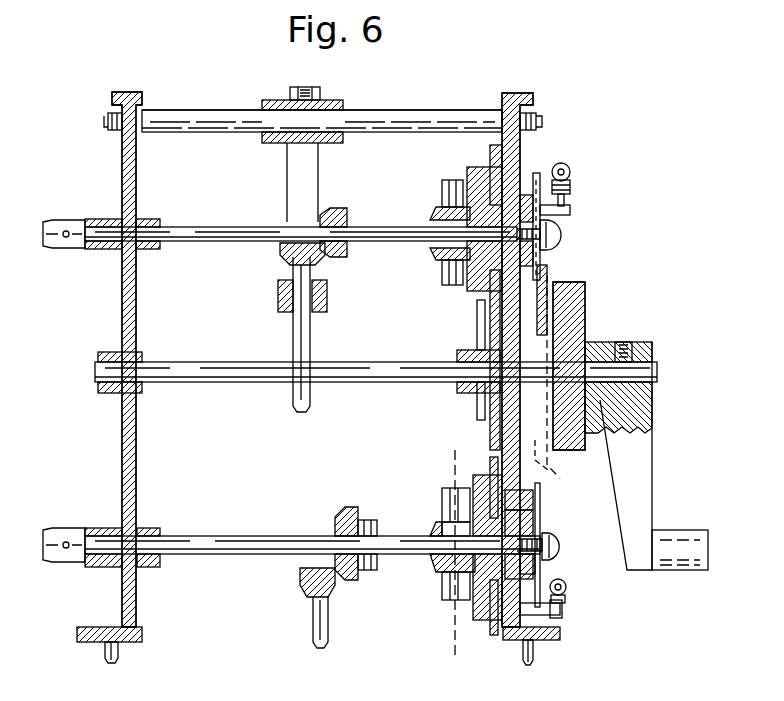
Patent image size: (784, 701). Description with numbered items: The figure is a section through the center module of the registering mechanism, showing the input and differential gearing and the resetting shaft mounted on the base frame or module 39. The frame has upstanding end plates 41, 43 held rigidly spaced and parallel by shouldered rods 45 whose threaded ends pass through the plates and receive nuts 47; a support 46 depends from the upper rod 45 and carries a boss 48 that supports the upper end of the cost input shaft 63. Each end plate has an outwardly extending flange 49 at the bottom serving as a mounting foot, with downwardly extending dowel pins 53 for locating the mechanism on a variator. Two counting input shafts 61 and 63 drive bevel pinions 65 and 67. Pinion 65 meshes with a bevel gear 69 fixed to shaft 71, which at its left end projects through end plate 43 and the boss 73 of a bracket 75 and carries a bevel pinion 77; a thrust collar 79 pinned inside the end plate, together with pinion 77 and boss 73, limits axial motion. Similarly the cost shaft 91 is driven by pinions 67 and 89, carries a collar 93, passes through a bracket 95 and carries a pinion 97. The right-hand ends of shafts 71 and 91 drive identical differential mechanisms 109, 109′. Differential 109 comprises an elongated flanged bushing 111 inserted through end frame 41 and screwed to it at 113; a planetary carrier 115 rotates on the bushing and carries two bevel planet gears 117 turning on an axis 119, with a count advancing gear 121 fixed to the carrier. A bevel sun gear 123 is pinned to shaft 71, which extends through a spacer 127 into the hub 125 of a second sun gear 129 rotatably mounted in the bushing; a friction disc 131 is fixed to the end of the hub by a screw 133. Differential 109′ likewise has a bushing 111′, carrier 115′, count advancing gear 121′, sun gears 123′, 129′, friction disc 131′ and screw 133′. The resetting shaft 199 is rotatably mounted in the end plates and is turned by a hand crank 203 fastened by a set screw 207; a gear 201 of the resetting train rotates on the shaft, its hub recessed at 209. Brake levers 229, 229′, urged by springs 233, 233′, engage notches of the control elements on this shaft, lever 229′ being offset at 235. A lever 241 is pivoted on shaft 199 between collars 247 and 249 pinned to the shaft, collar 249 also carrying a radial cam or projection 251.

The base frame or module 39 is at (428, 108).
The end plate 41 is at (512, 95).
The end plate 43 is at (128, 92).
The shouldered rod 45 is at (192, 110).
The support 46 is at (292, 160).
The nut 47 is at (106, 118).
The boss 48 is at (278, 293).
The flange 49 is at (80, 637).
The dowel pin 53 is at (110, 656).
The counting input shaft 61 is at (313, 622).
The input shaft 63 is at (293, 335).
The bevel pinion 65 is at (300, 580).
The bevel pinion 67 is at (282, 255).
The bevel gear 69 is at (338, 512).
The shaft 71 is at (246, 536).
The boss 73 is at (100, 528).
The bracket 75 is at (94, 570).
The bevel pinion 77 is at (56, 528).
The thrust collar 79 is at (156, 528).
The pinion 89 is at (336, 212).
The cost shaft 91 is at (252, 225).
The collar 93 is at (150, 219).
The bracket 95 is at (104, 219).
The pinion 97 is at (60, 220).
The differential mechanism 109 is at (430, 572).
The differential mechanism 109′ is at (440, 262).
The flanged bushing 111 is at (535, 520).
The flanged bushing 111′ is at (524, 195).
The screw fastening 113 is at (533, 500).
The planetary carrier 115 is at (446, 490).
The planetary carrier 115′ is at (444, 182).
The bevel planet gear 117 is at (446, 522).
The axis 119 is at (453, 628).
The count advancing gear 121 is at (490, 462).
The count advancing gear 121′ is at (490, 150).
The bevel sun gear 123 is at (436, 524).
The bevel sun gear 123′ is at (436, 210).
The hub 125 is at (528, 566).
The spacer 127 is at (440, 566).
The second sun gear 129 is at (492, 610).
The second sun gear 129′ is at (490, 296).
The friction disc 131 is at (540, 510).
The friction disc 131′ is at (538, 178).
The screw 133 is at (556, 538).
The screw 133′ is at (550, 235).
The shaft 199 is at (190, 362).
The gear 201 is at (575, 296).
The hand crank 203 is at (640, 448).
The set screw 207 is at (624, 344).
The central recess 209 is at (585, 345).
The brake lever 229 is at (548, 470).
The brake lever 229′ is at (552, 273).
The spring 233 is at (566, 587).
The spring 233′ is at (571, 174).
The offset 235 is at (548, 290).
The lever 241 is at (477, 322).
The collar 247 is at (460, 392).
The collar 249 is at (478, 396).
The radial cam or projection 251 is at (477, 338).